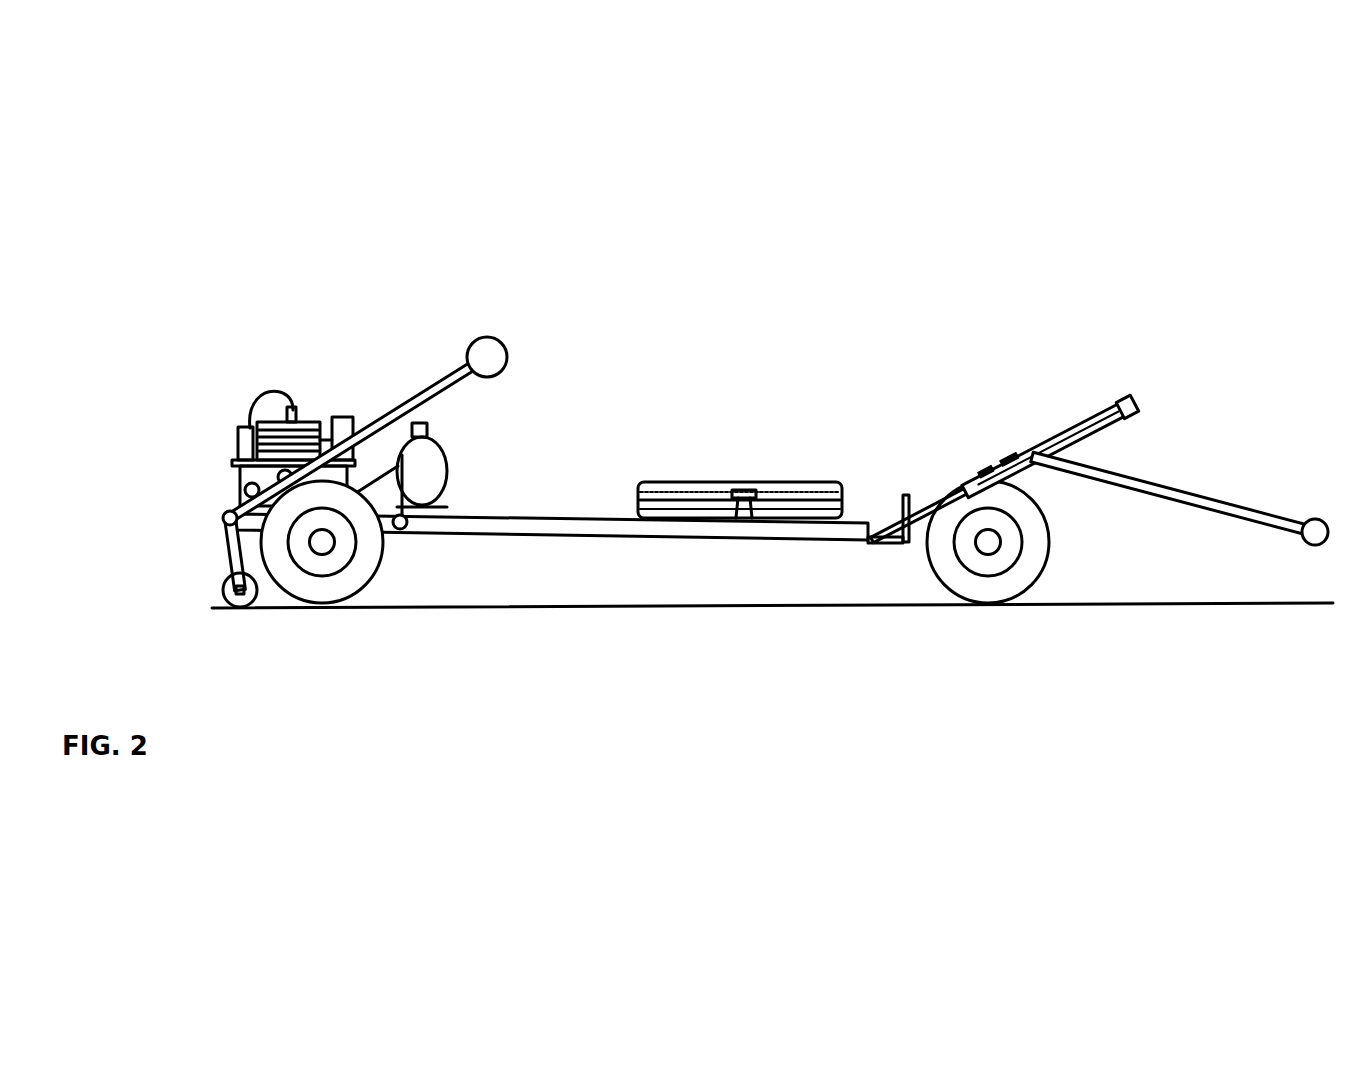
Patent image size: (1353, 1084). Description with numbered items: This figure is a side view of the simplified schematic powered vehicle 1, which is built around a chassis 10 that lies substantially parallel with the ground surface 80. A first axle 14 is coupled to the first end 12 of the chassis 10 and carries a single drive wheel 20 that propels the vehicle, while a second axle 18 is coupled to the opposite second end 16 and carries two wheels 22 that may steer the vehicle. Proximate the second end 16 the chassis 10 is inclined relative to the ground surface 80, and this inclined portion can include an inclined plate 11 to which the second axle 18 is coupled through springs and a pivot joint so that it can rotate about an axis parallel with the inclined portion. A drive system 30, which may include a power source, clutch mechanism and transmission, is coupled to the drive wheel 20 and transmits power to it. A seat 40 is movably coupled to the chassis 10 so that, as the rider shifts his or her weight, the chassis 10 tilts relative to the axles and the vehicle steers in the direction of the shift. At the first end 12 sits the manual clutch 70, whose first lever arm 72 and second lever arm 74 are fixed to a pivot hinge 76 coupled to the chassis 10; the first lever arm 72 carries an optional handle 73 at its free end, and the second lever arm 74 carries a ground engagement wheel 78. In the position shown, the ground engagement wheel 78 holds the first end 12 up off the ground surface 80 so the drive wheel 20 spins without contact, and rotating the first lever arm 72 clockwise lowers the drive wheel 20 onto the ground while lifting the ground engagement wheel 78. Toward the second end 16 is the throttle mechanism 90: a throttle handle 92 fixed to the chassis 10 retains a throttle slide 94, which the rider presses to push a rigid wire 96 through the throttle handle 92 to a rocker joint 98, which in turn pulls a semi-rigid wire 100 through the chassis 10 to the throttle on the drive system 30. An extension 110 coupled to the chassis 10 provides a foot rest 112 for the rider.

The powered vehicle 1 is at (856, 229).
The chassis 10 is at (520, 512).
The inclined plate 11 is at (893, 520).
The first end 12 is at (333, 352).
The first axle 14 is at (322, 545).
The second end 16 is at (1046, 363).
The second axle 18 is at (988, 545).
The drive wheel 20 is at (367, 588).
The wheels 22 is at (1007, 602).
The drive system 30 is at (260, 378).
The seat 40 is at (767, 478).
The manual clutch 70 is at (361, 495).
The first lever arm 72 is at (428, 395).
The handle 73 is at (507, 342).
The second lever arm 74 is at (228, 582).
The pivot hinge 76 is at (225, 513).
The ground engagement wheel 78 is at (250, 608).
The ground surface 80 is at (1100, 597).
The throttle mechanism 90 is at (1039, 424).
The throttle handle 92 is at (1112, 428).
The throttle slide 94 is at (1140, 403).
The rigid wire 96 is at (982, 441).
The rocker joint 98 is at (914, 497).
The semi-rigid wire 100 is at (890, 540).
The extension 110 is at (1185, 490).
The foot rest 112 is at (1314, 530).